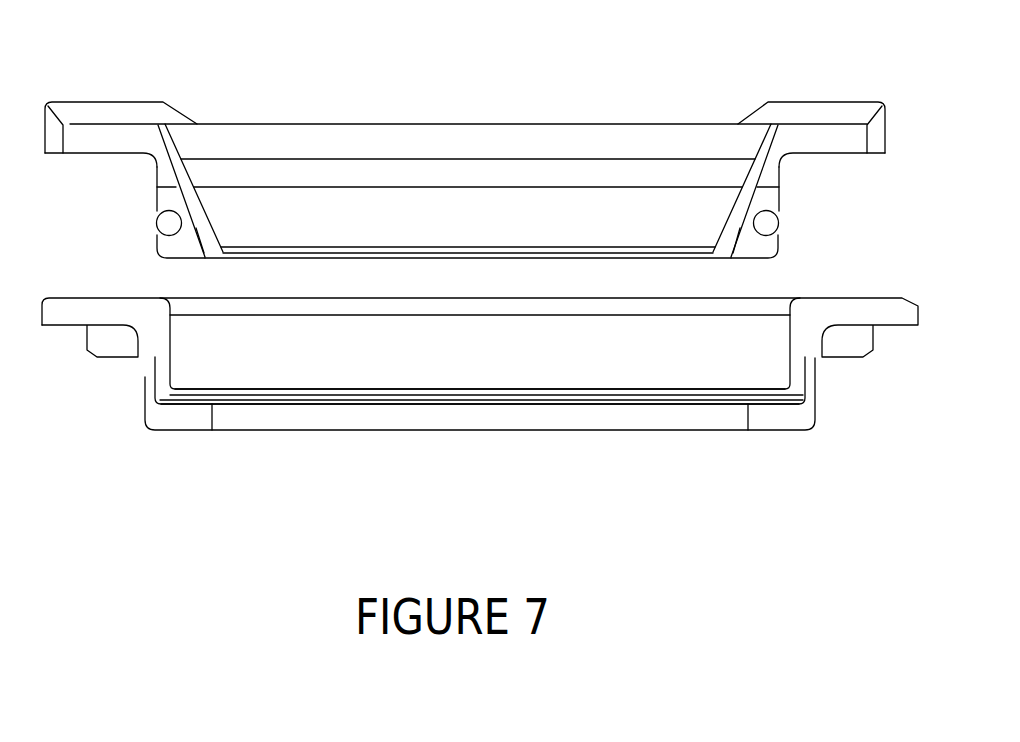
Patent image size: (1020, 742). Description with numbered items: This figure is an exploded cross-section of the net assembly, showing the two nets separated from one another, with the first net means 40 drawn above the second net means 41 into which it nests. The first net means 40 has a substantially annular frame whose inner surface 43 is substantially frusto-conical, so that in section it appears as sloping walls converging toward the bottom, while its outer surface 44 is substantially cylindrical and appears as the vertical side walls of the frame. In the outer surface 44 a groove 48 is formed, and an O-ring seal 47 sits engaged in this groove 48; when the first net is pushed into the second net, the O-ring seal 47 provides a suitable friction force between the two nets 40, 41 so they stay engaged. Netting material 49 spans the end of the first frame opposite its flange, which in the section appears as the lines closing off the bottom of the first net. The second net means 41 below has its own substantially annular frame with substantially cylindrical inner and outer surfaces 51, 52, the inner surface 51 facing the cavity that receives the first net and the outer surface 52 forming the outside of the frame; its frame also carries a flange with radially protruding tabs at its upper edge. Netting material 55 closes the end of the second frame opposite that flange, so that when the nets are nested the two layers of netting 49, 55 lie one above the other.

The first net means 40 is at (145, 100).
The second net means 41 is at (783, 432).
The frusto-conical inner surface 43 is at (172, 150).
The cylindrical outer surface 44 is at (779, 172).
The O-ring seal 47 is at (779, 223).
The groove 48 is at (783, 236).
The netting material 49 is at (668, 250).
The inner surface 51 is at (172, 357).
The outer surface 52 is at (140, 377).
The netting material 55 is at (448, 403).